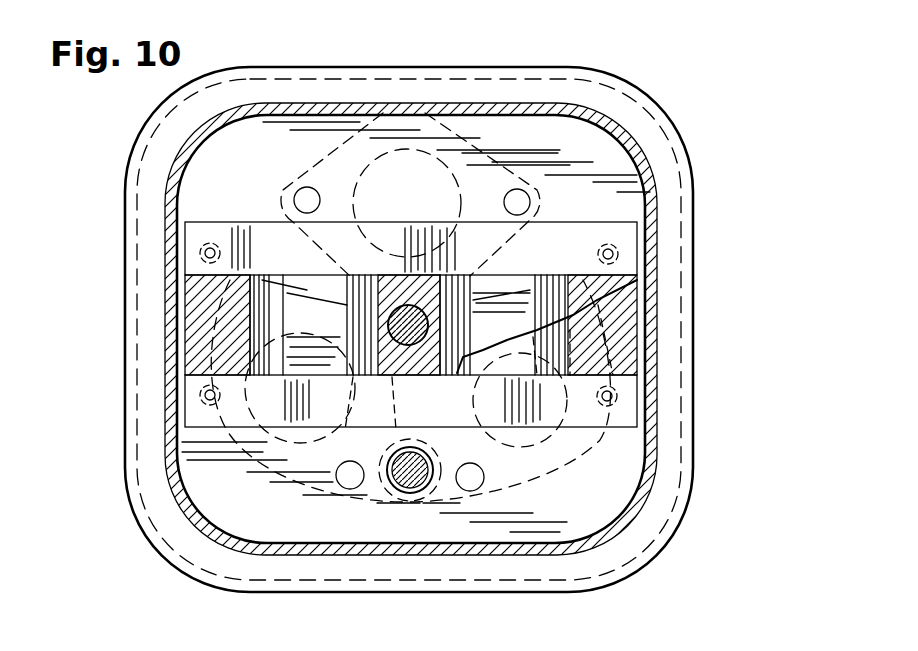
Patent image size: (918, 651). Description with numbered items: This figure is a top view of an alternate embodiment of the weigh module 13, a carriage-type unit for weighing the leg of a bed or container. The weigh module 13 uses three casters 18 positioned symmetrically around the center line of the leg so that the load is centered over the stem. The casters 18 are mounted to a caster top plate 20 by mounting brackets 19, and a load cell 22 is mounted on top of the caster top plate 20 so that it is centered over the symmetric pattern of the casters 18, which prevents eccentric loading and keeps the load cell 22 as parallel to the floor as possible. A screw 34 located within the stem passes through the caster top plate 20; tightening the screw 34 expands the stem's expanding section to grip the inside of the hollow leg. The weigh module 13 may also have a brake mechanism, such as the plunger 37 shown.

The weigh module 13 is at (692, 296).
The casters 18 is at (430, 158).
The mounting brackets 19 is at (517, 147).
The caster top plate 20 is at (600, 157).
The load cell 22 is at (623, 410).
The screw 34 is at (438, 338).
The plunger 37 is at (415, 483).